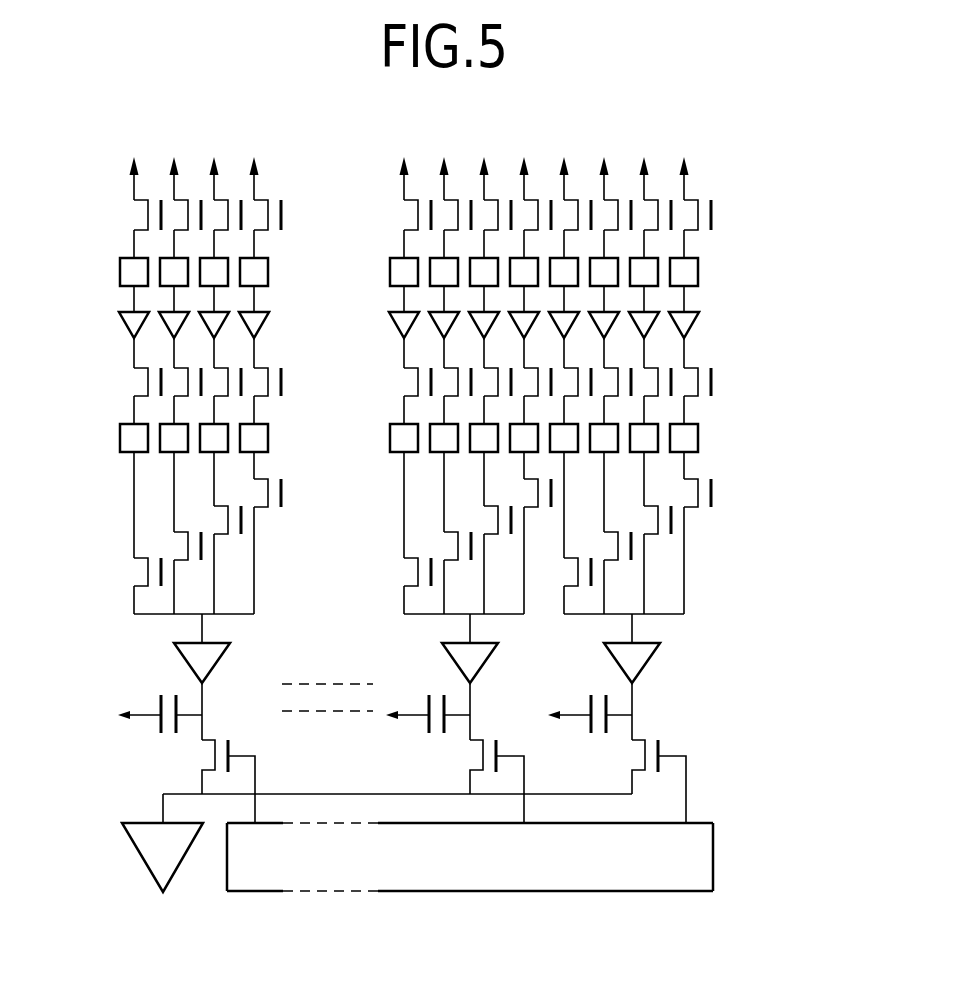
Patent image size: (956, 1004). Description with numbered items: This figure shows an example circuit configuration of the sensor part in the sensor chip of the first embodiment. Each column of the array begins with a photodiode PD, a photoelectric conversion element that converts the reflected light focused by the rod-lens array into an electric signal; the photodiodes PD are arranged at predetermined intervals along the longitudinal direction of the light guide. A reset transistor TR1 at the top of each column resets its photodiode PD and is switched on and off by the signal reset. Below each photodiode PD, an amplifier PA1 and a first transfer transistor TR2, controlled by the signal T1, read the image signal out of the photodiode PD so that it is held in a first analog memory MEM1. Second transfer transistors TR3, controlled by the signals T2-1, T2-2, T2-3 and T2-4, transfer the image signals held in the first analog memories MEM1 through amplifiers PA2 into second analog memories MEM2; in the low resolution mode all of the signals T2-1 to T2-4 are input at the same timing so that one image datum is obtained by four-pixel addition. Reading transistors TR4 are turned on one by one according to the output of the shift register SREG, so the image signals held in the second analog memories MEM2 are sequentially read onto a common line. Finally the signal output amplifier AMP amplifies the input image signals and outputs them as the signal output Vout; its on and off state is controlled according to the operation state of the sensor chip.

The reset transistor TR1 is at (703, 195).
The photodiode PD is at (700, 265).
The amplifier PA1 is at (700, 330).
The first transfer transistor TR2 is at (703, 395).
The first analog memory MEM1 is at (700, 433).
The second transfer transistor TR3 is at (703, 475).
The amplifier PA2 is at (646, 663).
The second analog memory MEM2 is at (600, 735).
The reading transistor TR4 is at (653, 738).
The signal output amplifier AMP is at (145, 867).
The shift register SREG is at (714, 858).
The reset signal reset is at (161, 214).
The signal T1 is at (161, 382).
The signal T2-1 is at (285, 493).
The signal T2-2 is at (241, 520).
The signal T2-3 is at (201, 546).
The signal T2-4 is at (161, 572).
The signal output Vout is at (163, 892).